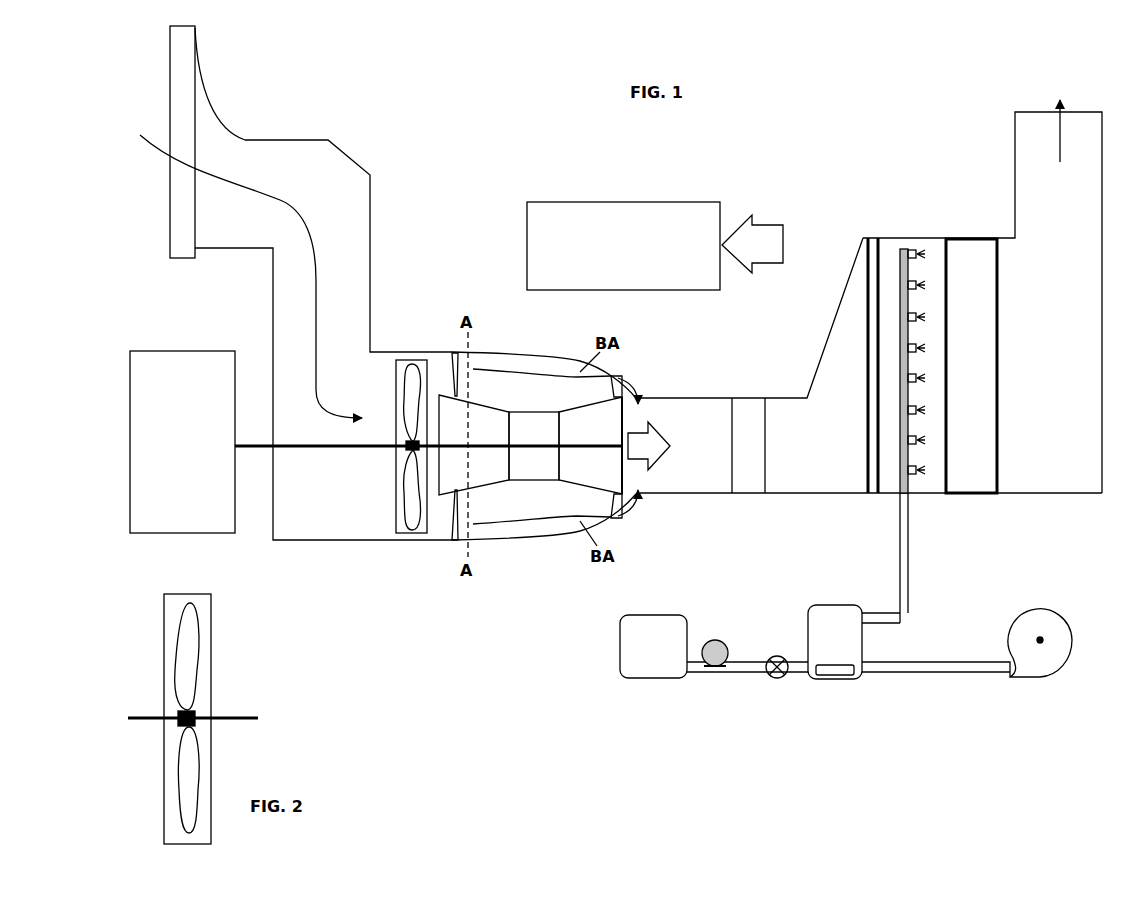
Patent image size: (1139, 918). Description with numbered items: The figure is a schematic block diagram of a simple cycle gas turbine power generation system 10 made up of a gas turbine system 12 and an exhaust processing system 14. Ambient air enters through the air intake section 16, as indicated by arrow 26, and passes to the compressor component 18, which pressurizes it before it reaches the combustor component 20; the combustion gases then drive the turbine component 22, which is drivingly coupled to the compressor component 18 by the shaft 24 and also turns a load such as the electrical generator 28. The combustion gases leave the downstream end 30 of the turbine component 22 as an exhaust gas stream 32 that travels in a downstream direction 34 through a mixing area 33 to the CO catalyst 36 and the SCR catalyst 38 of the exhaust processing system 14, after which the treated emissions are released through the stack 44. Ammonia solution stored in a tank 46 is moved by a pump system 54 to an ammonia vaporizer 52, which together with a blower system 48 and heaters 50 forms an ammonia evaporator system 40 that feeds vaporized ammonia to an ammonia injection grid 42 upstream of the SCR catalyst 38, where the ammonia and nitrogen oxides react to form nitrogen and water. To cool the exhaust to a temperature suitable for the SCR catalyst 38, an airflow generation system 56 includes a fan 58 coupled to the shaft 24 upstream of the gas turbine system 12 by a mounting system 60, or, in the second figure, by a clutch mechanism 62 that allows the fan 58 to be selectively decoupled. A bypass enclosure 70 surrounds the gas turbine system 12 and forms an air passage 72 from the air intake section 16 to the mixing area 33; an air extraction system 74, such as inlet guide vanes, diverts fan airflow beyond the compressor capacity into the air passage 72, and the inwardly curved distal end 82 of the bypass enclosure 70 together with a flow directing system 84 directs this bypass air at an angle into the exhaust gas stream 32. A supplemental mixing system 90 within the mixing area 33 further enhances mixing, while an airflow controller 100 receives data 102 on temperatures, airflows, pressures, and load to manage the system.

In FIG. 1, the simple cycle gas turbine power generation system 10 is at (520, 126).
In FIG. 1, the gas turbine system 12 is at (530, 494).
In FIG. 1, the exhaust processing system 14 is at (963, 309).
In FIG. 1, the air intake section 16 is at (266, 302).
In FIG. 1, the compressor component 18 is at (474, 445).
In FIG. 1, the combustor component 20 is at (534, 446).
In FIG. 1, the turbine component 22 is at (590, 445).
In FIG. 1, the shaft 24 is at (315, 452).
In FIG. 2, the shaft 24 is at (148, 715).
In FIG. 1, the arrow 26 is at (300, 222).
In FIG. 1, the electrical generator 28 is at (130, 446).
In FIG. 1, the downstream end 30 is at (620, 463).
In FIG. 1, the exhaust gas stream 32 is at (649, 446).
In FIG. 1, the mixing area 33 is at (871, 365).
In FIG. 1, the downstream direction 34 is at (792, 510).
In FIG. 1, the CO catalyst 36 is at (866, 474).
In FIG. 1, the SCR catalyst 38 is at (998, 436).
In FIG. 1, the ammonia evaporator system 40 is at (827, 622).
In FIG. 1, the ammonia injection grid 42 is at (900, 262).
In FIG. 1, the stack 44 is at (1061, 145).
In FIG. 1, the tank 46 is at (620, 650).
In FIG. 1, the blower system 48 is at (1050, 674).
In FIG. 1, the heater 50 is at (841, 678).
In FIG. 1, the ammonia vaporizer 52 is at (822, 612).
In FIG. 1, the pump system 54 is at (708, 642).
In FIG. 1, the airflow generation system 56 is at (396, 517).
In FIG. 2, the airflow generation system 56 is at (163, 806).
In FIG. 1, the fan 58 is at (403, 487).
In FIG. 2, the fan 58 is at (177, 773).
In FIG. 1, the mounting system 60 is at (402, 448).
In FIG. 2, the clutch mechanism 62 is at (195, 722).
In FIG. 1, the bypass enclosure 70 is at (489, 352).
In FIG. 1, the air passage 72 is at (542, 446).
In FIG. 1, the air extraction system 74 is at (453, 368).
In FIG. 1, the distal end 82 is at (644, 396).
In FIG. 1, the flow directing system 84 is at (624, 382).
In FIG. 1, the supplemental mixing system 90 is at (748, 445).
In FIG. 1, the airflow controller 100 is at (623, 246).
In FIG. 1, the data 102 is at (768, 226).